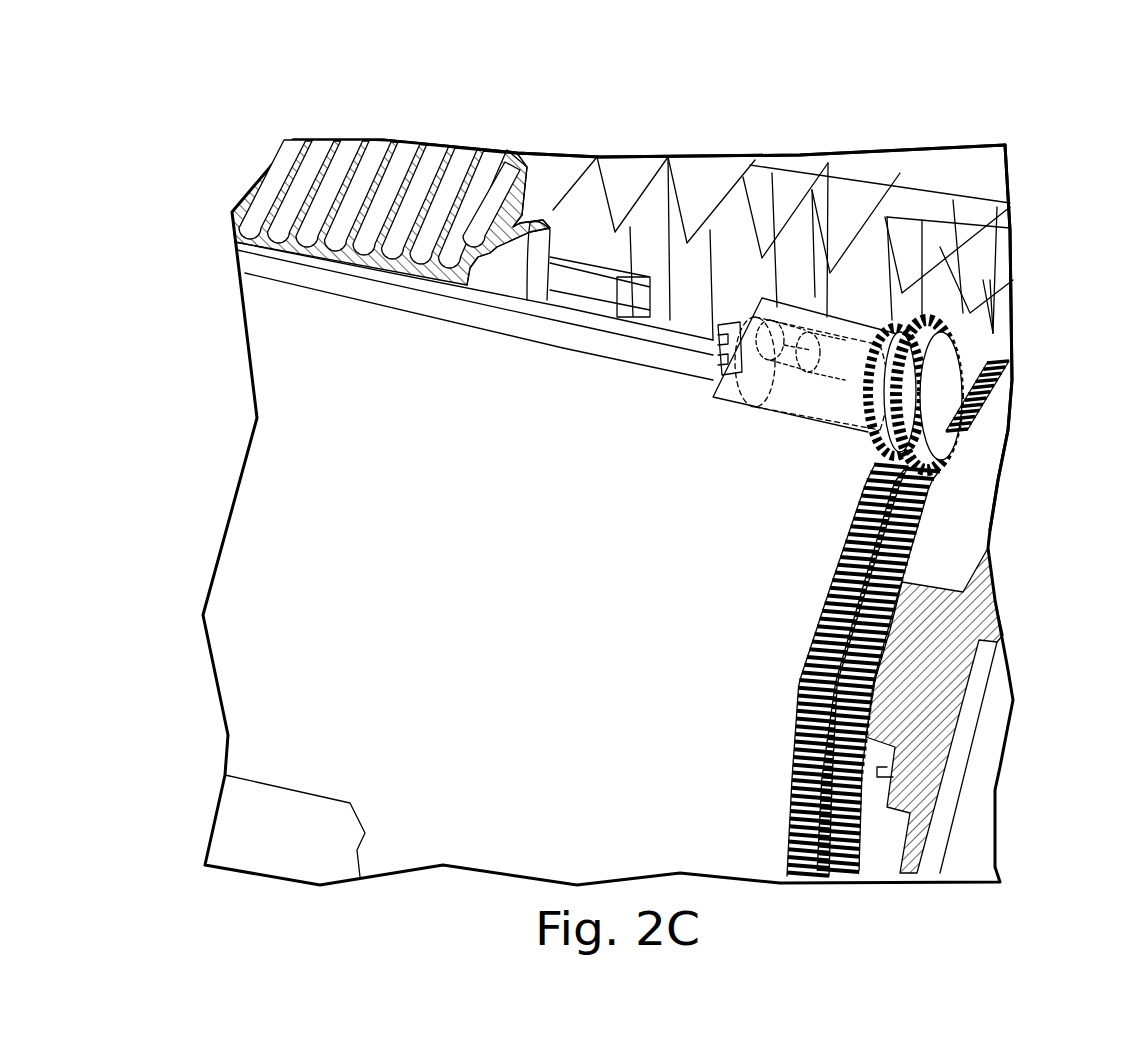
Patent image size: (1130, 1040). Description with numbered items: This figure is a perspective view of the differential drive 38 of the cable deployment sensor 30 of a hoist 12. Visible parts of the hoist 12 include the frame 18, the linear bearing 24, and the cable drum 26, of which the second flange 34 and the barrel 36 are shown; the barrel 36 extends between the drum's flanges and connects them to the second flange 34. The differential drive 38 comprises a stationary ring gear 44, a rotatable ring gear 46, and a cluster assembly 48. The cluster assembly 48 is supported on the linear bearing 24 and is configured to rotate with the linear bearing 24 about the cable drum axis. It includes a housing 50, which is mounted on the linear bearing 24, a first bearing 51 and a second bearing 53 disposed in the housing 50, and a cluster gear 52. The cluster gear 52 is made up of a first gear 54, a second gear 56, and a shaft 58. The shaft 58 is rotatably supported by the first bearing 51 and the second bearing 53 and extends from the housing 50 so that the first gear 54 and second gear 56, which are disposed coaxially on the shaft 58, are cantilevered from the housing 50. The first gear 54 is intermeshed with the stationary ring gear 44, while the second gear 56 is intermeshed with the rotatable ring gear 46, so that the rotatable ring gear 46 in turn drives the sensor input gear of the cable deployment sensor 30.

The hoist 12 is at (432, 118).
The frame 18 is at (980, 612).
The linear bearing 24 is at (283, 322).
The cable drum 26 is at (262, 228).
The cable deployment sensor 30 is at (982, 343).
The second flange 34 is at (520, 180).
The barrel 36 is at (363, 178).
The differential drive 38 is at (975, 336).
The stationary ring gear 44 is at (802, 880).
The rotatable ring gear 46 is at (850, 850).
The cluster assembly 48 is at (862, 302).
The housing 50 is at (803, 330).
The first bearing 51 is at (740, 322).
The cluster gear 52 is at (941, 391).
The second bearing 53 is at (837, 348).
The first gear 54 is at (962, 326).
The second gear 56 is at (965, 330).
The shaft 58 is at (773, 340).